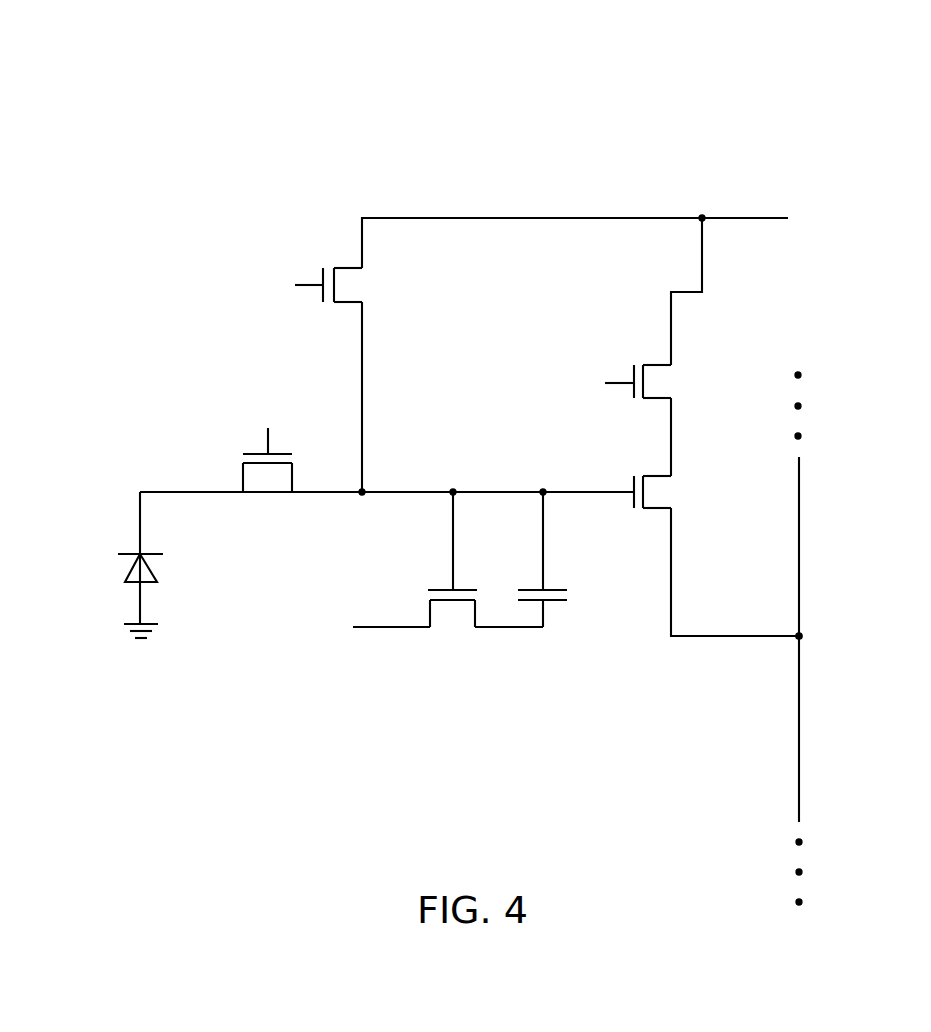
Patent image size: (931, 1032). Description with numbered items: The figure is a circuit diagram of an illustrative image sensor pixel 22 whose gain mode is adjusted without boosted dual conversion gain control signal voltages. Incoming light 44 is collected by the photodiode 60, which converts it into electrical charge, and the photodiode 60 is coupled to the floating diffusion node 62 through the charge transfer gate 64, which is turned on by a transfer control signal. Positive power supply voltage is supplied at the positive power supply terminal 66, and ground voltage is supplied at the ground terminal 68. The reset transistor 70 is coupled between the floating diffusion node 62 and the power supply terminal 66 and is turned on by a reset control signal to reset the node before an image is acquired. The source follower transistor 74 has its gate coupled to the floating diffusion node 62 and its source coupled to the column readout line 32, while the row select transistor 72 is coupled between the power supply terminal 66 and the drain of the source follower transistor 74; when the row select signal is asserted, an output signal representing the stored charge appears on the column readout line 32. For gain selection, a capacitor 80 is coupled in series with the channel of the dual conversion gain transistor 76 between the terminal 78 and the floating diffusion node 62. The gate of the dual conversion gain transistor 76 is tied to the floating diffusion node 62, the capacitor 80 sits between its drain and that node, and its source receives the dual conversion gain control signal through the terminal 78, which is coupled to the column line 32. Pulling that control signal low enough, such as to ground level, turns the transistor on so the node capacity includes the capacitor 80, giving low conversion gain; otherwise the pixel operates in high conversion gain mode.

The image sensor pixel 22 is at (447, 470).
The column readout line 32 is at (800, 573).
The incoming light 44 is at (87, 552).
The photodiode 60 is at (194, 566).
The floating diffusion node 62 is at (425, 519).
The charge transfer gate 64 is at (218, 427).
The positive power supply terminal 66 is at (760, 218).
The ground terminal 68 is at (193, 669).
The reset transistor 70 is at (357, 266).
The row select transistor 72 is at (675, 377).
The source follower transistor 74 is at (691, 487).
The dual conversion gain transistor 76 is at (480, 616).
The terminal 78 is at (402, 628).
The capacitor 80 is at (557, 602).